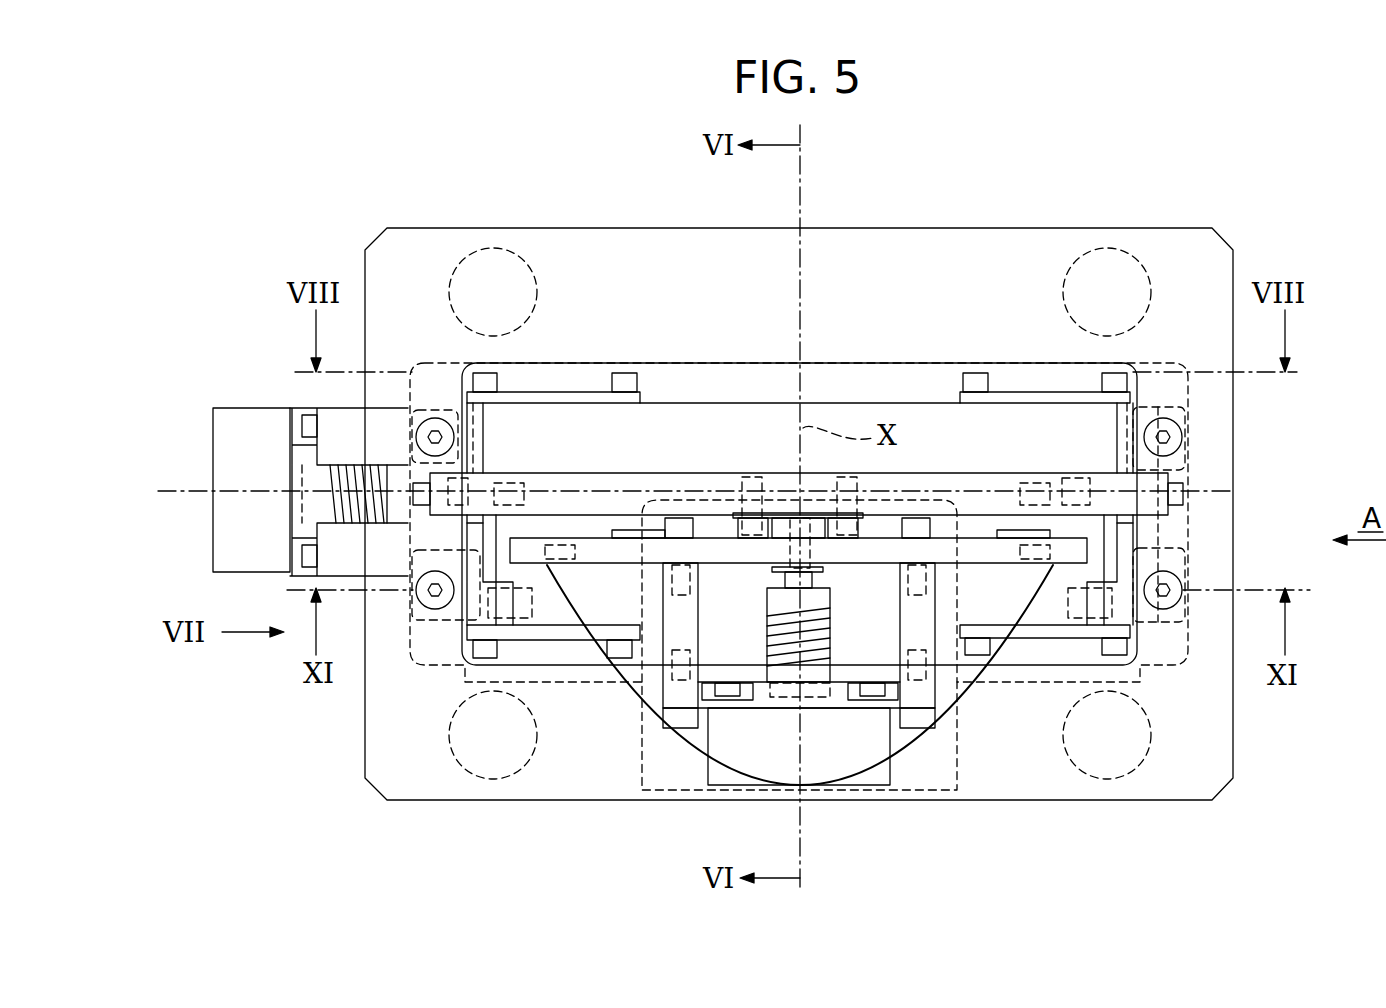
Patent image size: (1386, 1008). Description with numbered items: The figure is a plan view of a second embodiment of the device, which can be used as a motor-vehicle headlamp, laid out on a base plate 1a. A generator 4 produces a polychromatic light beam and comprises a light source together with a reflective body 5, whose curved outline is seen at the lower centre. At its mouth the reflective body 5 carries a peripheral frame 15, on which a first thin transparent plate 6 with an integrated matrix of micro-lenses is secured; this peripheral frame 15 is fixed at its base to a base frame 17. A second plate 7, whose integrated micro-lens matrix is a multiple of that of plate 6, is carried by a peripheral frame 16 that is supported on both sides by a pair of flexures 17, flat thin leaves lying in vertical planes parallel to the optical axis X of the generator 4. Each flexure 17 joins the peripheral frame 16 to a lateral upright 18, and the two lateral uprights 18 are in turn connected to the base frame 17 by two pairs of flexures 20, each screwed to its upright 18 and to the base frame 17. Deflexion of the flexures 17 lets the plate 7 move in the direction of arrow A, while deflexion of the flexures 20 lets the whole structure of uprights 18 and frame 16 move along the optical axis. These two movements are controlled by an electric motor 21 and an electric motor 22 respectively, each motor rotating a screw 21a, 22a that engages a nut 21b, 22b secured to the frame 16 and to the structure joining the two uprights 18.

The base plate 1a is at (1197, 750).
The generator 4 is at (738, 750).
The reflective body 5 is at (898, 750).
The first thin transparent plate 6 is at (615, 578).
The second plate 7 is at (634, 446).
The peripheral frame 15 is at (567, 553).
The peripheral frame 16 is at (998, 487).
The flexures 17 is at (497, 530).
The lateral uprights 18 is at (472, 585).
The flexures 20 is at (565, 403).
The electric motor 21 is at (213, 440).
The screw 21a is at (353, 462).
The nut 21b is at (445, 510).
The electric motor 22 is at (800, 714).
The screw 22a is at (820, 600).
The nut 22b is at (782, 575).